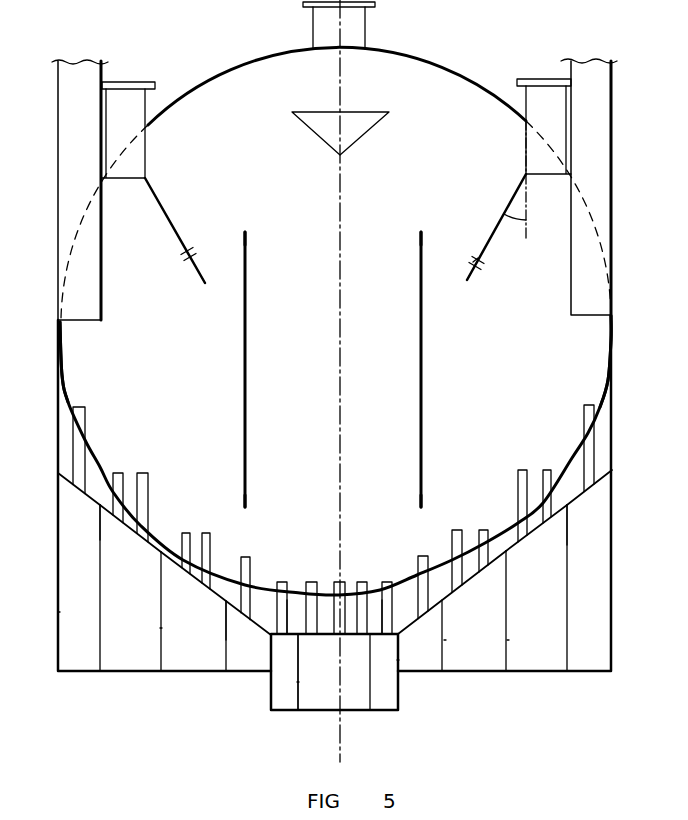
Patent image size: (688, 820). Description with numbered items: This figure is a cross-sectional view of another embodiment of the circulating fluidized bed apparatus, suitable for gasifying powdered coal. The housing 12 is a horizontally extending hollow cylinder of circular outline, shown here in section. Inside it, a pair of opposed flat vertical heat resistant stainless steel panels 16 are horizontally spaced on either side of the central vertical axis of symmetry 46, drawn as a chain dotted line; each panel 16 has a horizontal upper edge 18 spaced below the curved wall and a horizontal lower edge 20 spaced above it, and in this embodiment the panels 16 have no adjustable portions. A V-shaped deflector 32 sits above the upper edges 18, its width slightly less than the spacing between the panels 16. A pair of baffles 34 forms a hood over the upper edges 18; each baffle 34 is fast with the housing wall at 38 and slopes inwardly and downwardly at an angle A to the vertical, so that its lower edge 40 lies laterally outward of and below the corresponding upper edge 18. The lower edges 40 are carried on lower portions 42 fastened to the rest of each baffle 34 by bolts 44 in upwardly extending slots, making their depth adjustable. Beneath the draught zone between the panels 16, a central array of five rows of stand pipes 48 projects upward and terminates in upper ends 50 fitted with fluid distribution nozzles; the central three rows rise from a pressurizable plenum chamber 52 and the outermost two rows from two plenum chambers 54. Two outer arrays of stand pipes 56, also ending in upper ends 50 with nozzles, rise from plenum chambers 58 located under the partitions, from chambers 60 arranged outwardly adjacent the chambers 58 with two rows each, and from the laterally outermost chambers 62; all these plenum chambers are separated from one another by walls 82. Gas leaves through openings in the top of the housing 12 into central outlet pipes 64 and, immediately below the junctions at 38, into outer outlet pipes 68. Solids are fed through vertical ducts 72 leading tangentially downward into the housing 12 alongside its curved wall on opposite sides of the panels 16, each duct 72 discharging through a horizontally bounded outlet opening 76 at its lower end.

The housing 12 is at (422, 63).
The panels 16 is at (235, 392).
The upper edge 18 is at (246, 230).
The lower edge 20 is at (253, 509).
The V-shaped deflector 32 is at (390, 128).
The baffles 34 is at (184, 222).
The junction of baffle upper edge with housing wall 38 is at (137, 147).
The lower edges of baffles 40 is at (205, 286).
The lower portions of baffles 42 is at (192, 253).
The bolts 44 is at (477, 242).
The central vertical axis of symmetry 46 is at (342, 22).
The stand pipes 48 is at (290, 600).
The upper ends 50 is at (152, 472).
The plenum chamber 52 is at (358, 712).
The plenum chambers 54 is at (292, 712).
The outer stand pipes 56 is at (135, 508).
The plenum chambers 58 is at (250, 658).
The plenum chambers 60 is at (184, 658).
The plenum chambers 62 is at (80, 658).
The pipes 64 is at (314, 28).
The pipes 68 is at (135, 108).
The vertical ducts 72 is at (72, 137).
The outlet openings 76 is at (80, 330).
The walls 82 is at (56, 608).
The angle A is at (524, 179).